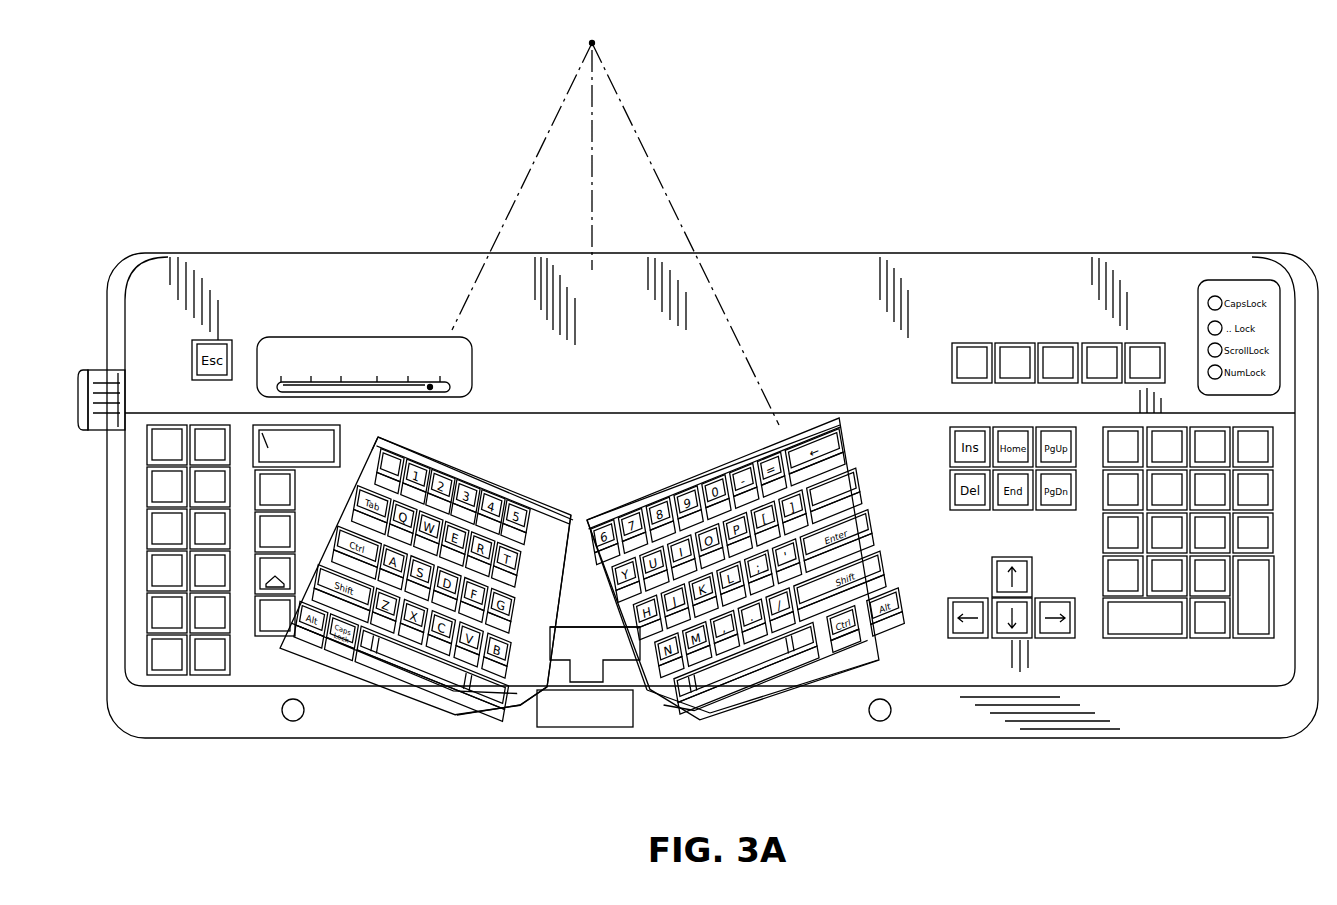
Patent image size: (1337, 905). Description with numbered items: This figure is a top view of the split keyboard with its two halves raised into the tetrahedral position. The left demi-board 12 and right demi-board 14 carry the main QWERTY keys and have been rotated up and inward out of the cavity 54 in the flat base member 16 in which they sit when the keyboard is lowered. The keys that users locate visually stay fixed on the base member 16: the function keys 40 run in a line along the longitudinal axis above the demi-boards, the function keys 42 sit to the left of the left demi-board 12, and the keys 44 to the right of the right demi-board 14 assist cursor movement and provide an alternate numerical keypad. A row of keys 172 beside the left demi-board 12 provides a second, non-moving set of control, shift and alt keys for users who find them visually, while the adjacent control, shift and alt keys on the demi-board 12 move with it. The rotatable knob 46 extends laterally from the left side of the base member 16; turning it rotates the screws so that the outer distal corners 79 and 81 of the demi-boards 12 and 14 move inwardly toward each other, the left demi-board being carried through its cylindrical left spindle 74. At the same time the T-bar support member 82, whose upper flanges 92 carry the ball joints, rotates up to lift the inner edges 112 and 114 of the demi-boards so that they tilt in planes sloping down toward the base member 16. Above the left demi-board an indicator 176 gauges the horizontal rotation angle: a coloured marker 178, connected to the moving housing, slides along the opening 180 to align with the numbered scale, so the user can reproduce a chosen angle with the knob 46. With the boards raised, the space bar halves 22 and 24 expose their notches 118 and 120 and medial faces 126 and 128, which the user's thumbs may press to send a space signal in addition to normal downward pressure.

The left demi-board 12 is at (348, 672).
The right demi-board 14 is at (840, 667).
The base member 16 is at (697, 740).
The space bar half 22 is at (405, 677).
The space bar half 24 is at (763, 673).
The function keys 40 is at (1060, 332).
The function keys 42 is at (175, 692).
The keys 44 is at (1175, 660).
The rotatable knob 46 is at (77, 378).
The cavity 54 is at (548, 446).
The left spindle 74 is at (423, 432).
The outer distal corner 79 is at (376, 440).
The outer distal corner 81 is at (839, 422).
The T-bar support member 82 is at (593, 713).
The upper flanges 92 is at (634, 683).
The inner edge 112 is at (563, 527).
The inner edge 114 is at (602, 537).
The notch 118 is at (487, 692).
The notch 120 is at (697, 717).
The medial face 126 is at (500, 697).
The medial face 128 is at (670, 693).
The row of keys 172 is at (263, 644).
The indicator 176 is at (400, 345).
The coloured marker 178 is at (431, 383).
The opening 180 is at (295, 383).